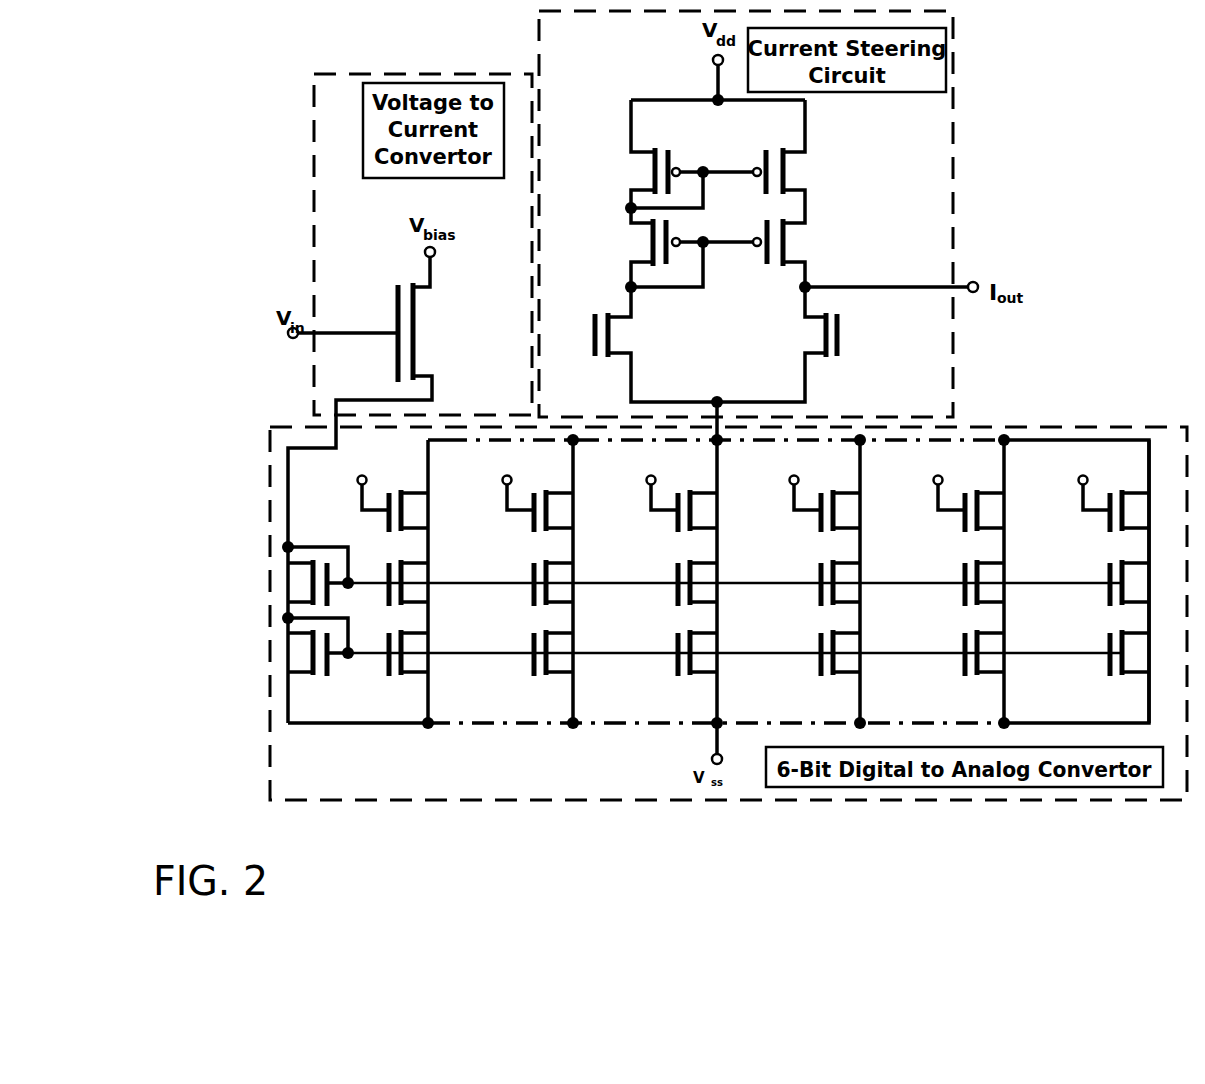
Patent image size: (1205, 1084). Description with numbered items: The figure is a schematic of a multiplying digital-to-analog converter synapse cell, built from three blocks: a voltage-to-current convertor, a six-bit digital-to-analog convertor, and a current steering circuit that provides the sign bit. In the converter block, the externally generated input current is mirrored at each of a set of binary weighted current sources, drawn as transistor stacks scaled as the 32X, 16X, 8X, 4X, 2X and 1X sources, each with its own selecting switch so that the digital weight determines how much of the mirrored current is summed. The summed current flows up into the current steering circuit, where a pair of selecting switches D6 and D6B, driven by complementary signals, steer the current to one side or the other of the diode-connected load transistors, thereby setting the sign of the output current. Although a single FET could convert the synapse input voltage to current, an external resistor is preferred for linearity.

The binary weighted current source 32X is at (396, 584).
The binary weighted current source 16X is at (541, 581).
The binary weighted current source 8X is at (685, 581).
The binary weighted current source 4X is at (828, 581).
The binary weighted current source 2X is at (972, 581).
The binary weighted current source 1X is at (1114, 581).
The selecting switch D6 is at (595, 333).
The complementary selecting switch D6B is at (837, 333).